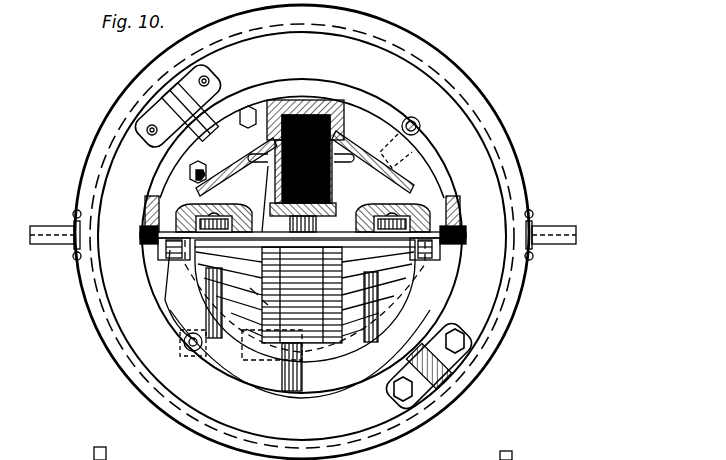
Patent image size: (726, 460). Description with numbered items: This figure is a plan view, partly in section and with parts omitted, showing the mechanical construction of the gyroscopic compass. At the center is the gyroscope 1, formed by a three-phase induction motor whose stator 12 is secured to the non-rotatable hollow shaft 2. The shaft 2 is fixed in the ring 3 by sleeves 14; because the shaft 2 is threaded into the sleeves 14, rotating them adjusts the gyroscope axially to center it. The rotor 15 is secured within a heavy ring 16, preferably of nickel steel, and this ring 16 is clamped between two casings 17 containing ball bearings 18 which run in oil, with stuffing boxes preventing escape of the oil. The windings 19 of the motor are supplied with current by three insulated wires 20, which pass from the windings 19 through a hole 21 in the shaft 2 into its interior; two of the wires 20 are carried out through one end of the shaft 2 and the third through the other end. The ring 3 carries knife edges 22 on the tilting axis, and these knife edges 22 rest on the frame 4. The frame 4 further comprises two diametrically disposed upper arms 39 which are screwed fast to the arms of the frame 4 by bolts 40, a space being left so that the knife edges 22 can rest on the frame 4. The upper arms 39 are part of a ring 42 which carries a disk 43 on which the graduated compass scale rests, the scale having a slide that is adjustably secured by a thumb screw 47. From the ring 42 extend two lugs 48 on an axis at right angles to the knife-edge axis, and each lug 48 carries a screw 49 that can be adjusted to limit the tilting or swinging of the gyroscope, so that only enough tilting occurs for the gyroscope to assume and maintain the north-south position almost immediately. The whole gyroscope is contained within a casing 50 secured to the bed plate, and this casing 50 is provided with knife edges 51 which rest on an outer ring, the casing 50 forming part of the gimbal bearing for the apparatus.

The gyroscope 1 is at (319, 209).
The hollow shaft 2 is at (352, 240).
The ring 3 is at (338, 88).
The frame 4 is at (466, 306).
The stator 12 is at (268, 186).
The sleeves 14 is at (148, 224).
The rotor 15 is at (305, 116).
The heavy ring 16 is at (292, 102).
The casings 17 is at (355, 140).
The ball bearings 18 is at (195, 206).
The windings 19 is at (428, 148).
The insulated wires 20 is at (146, 244).
The hole 21 is at (257, 280).
The knife edges 22 is at (172, 104).
The upper arms 39 is at (384, 386).
The bolts 40 is at (146, 130).
The ring 42 is at (222, 336).
The disk 43 is at (411, 117).
The thumb screw 47 is at (240, 270).
The lugs 48 is at (188, 332).
The screw 49 is at (409, 128).
The casing 50 is at (103, 315).
The knife edges 51 is at (42, 228).